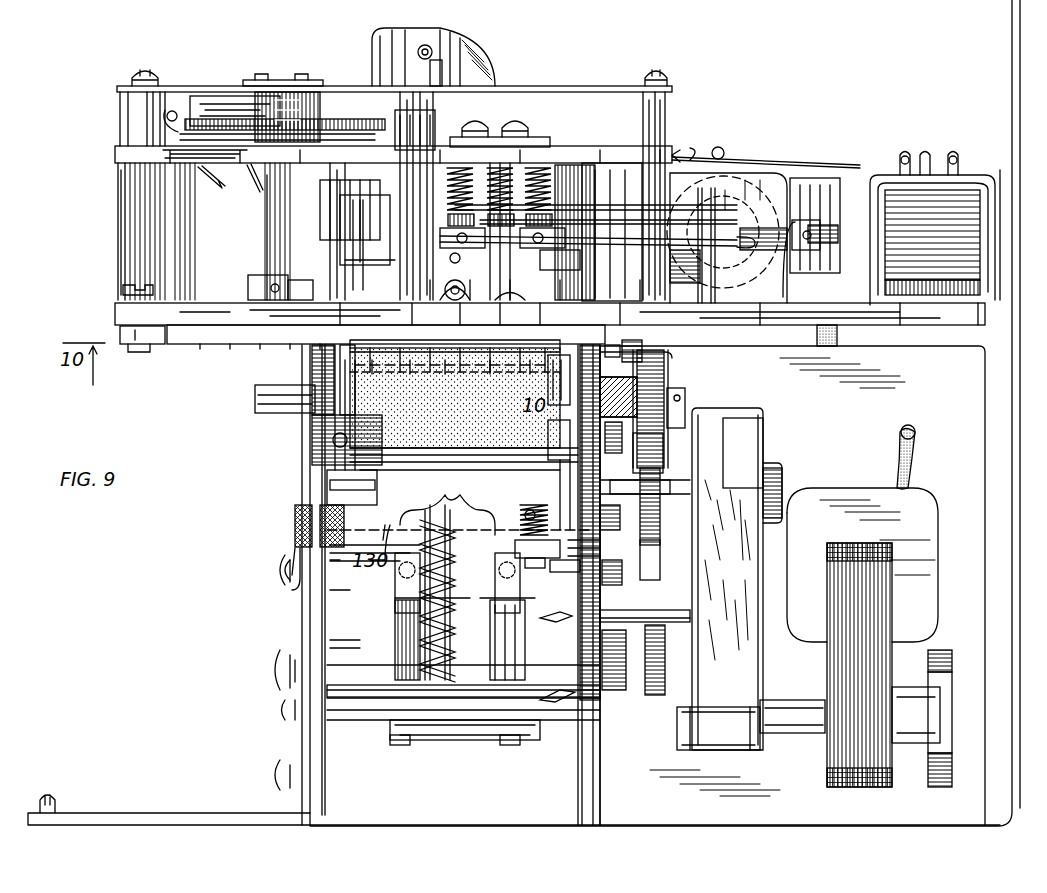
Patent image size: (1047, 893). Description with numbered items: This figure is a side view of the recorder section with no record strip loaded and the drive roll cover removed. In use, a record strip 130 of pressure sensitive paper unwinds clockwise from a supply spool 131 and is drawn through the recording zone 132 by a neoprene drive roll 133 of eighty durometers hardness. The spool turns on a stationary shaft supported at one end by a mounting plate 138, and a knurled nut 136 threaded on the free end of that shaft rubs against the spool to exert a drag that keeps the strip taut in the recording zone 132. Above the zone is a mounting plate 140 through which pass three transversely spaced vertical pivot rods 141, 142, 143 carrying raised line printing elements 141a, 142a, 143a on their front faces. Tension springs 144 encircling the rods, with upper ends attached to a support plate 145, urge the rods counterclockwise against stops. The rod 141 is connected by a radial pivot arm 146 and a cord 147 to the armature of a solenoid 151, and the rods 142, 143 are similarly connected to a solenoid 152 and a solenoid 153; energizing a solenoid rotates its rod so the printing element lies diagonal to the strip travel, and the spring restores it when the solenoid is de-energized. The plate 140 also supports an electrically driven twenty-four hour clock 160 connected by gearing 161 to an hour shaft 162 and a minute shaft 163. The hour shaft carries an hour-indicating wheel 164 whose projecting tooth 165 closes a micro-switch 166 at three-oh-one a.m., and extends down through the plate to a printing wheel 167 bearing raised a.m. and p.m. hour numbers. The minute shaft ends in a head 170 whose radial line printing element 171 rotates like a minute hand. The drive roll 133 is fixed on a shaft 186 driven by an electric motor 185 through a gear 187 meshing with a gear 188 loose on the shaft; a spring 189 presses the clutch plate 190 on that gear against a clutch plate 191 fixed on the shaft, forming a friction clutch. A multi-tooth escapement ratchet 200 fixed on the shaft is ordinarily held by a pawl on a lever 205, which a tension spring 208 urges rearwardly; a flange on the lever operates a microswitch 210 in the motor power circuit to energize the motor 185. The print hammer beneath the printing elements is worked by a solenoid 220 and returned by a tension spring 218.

The record strip 130 is at (550, 325).
The supply spool 131 is at (295, 512).
The recording zone 132 is at (313, 360).
The drive roll 133 is at (352, 412).
The knurled nut 136 is at (293, 535).
The mounting plate 138 is at (578, 776).
The mounting plate 140 is at (742, 325).
The vertical pivot rod 141 is at (445, 302).
The printing element 141a is at (455, 362).
The vertical pivot rod 142 is at (520, 302).
The printing element 142a is at (496, 362).
The vertical pivot rod 143 is at (566, 302).
The printing element 143a is at (540, 362).
The tension springs 144 is at (528, 184).
The support plate 145 is at (583, 146).
The radial pivot arm 146 is at (480, 302).
The cord 147 is at (653, 302).
The solenoid 151 is at (980, 195).
The solenoid 152 is at (862, 175).
The solenoid 153 is at (740, 175).
The 24 hour clock 160 is at (380, 236).
The gearing 161 is at (408, 118).
The hour shaft 162 is at (266, 210).
The minute shaft 163 is at (380, 218).
The hour-indicating wheel 164 is at (178, 132).
The projecting tooth 165 is at (312, 88).
The micro-switch 166 is at (232, 100).
The printing wheel 167 is at (190, 345).
The head 170 is at (372, 362).
The line printing element 171 is at (414, 362).
The electric motor 185 is at (757, 443).
The shaft 186 is at (254, 400).
The gear 187 is at (650, 540).
The gear 188 is at (690, 380).
The spring 189 is at (682, 405).
The clutch plate 190 is at (655, 360).
The clutch plate 191 is at (650, 382).
The multi-tooth escapement ratchet 200 is at (464, 405).
The lever 205 is at (572, 470).
The tension spring 208 is at (575, 538).
The microswitch 210 is at (528, 508).
The tension spring 218 is at (435, 595).
The solenoid 220 is at (430, 625).